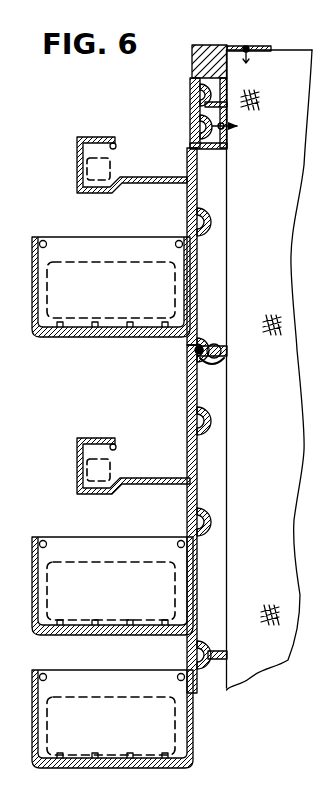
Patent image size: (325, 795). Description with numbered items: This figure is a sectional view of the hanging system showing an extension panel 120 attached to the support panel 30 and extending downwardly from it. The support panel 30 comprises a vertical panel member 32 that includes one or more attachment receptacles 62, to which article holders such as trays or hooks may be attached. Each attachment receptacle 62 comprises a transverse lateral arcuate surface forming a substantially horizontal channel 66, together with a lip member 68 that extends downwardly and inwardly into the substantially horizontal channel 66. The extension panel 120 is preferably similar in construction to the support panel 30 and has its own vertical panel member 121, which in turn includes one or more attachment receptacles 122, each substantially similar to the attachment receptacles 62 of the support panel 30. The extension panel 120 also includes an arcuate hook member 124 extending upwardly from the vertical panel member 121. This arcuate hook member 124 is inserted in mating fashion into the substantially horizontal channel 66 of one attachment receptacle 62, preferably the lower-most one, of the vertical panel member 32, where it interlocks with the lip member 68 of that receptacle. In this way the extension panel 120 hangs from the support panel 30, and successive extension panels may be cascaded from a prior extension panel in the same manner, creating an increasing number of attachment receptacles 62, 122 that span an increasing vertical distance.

The support panel 30 is at (200, 240).
The vertical panel member 32 is at (192, 290).
The attachment receptacle 62 is at (188, 127).
The substantially horizontal channel 66 is at (205, 347).
The lip member 68 is at (194, 350).
The extension panel 120 is at (193, 490).
The vertical panel member 121 is at (195, 592).
The attachment receptacle 122 is at (188, 427).
The arcuate hook member 124 is at (205, 362).